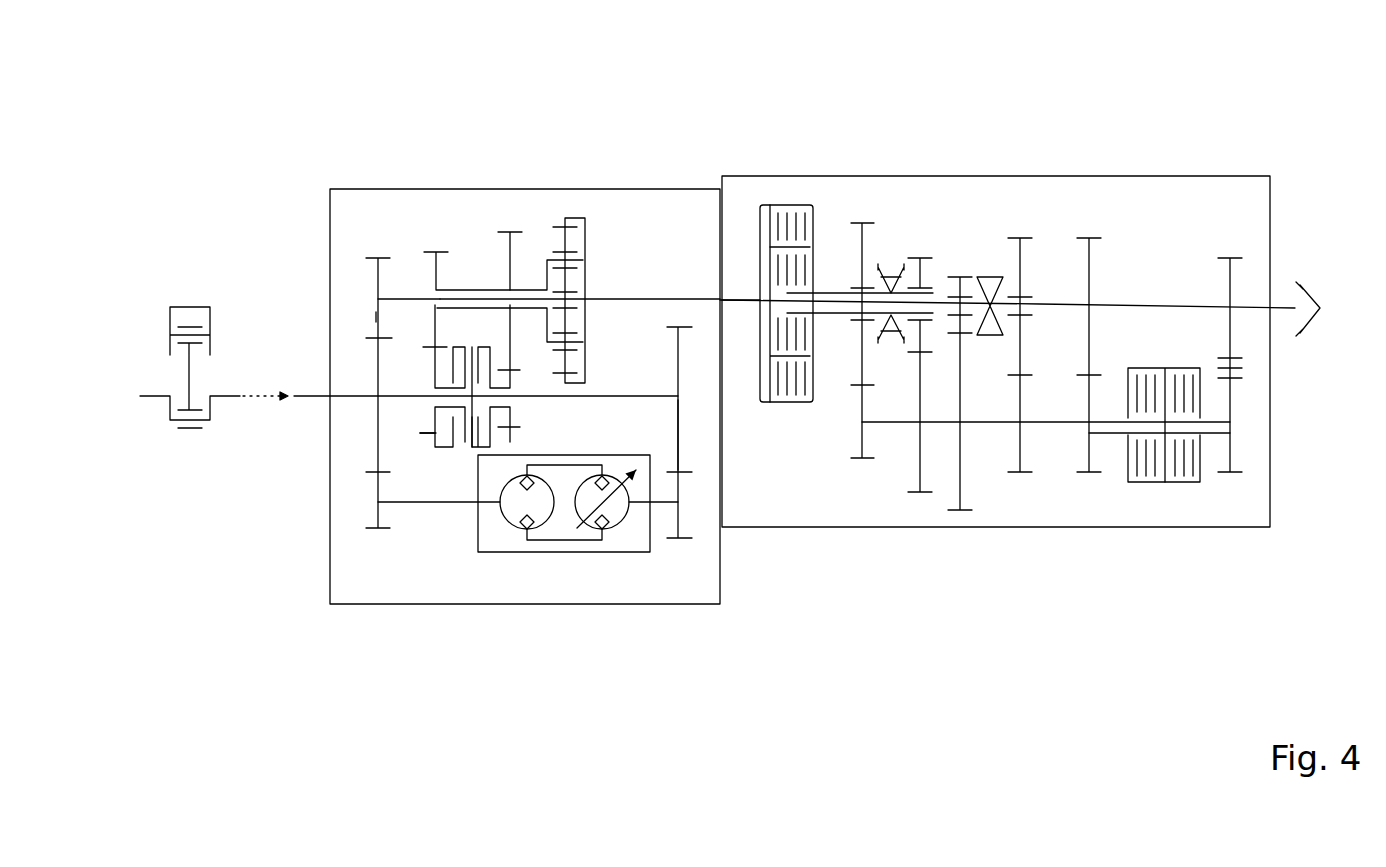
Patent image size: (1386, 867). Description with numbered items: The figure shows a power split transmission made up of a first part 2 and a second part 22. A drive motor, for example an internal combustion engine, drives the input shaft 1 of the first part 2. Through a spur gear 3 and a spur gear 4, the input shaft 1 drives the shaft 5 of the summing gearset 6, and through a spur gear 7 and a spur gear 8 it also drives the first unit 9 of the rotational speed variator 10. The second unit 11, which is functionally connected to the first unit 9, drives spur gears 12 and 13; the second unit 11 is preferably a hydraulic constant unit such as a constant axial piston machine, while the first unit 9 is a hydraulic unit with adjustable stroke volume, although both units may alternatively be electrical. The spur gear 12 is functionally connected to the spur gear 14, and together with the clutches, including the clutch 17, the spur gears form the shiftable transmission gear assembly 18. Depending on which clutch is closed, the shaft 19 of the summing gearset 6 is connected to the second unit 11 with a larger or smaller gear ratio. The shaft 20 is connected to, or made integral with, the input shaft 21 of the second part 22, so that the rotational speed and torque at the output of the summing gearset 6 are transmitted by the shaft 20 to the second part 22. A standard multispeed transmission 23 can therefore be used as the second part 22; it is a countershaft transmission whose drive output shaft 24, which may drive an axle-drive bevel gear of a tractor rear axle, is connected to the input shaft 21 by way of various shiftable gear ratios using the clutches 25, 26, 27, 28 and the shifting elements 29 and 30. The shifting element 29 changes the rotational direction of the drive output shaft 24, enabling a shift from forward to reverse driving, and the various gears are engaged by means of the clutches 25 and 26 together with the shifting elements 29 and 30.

The input shaft 1 is at (300, 393).
The first part 2 is at (330, 560).
The spur gear 3 is at (510, 425).
The spur gear 4 is at (512, 232).
The shaft 5 is at (542, 270).
The summing gearset 6 is at (590, 205).
The spur gear 7 is at (680, 438).
The spur gear 8 is at (688, 540).
The first unit 9 is at (620, 530).
The rotational speed variator 10 is at (528, 581).
The second unit 11 is at (515, 530).
The spur gear 12 is at (378, 317).
The spur gear 13 is at (378, 530).
The spur gear 14 is at (433, 288).
The clutch 17 is at (456, 336).
The shiftable transmission gear assembly 18 is at (405, 417).
The shaft 19 is at (408, 292).
The shaft 20 is at (670, 297).
The input shaft 21 is at (733, 300).
The second part 22 is at (998, 528).
The multispeed transmission 23 is at (1022, 200).
The drive output shaft 24 is at (1293, 300).
The clutch 25 is at (788, 412).
The clutch 26 is at (820, 259).
The clutch 27 is at (1150, 492).
The clutch 28 is at (1187, 492).
The shifting element 29 is at (891, 268).
The shifting element 30 is at (989, 275).